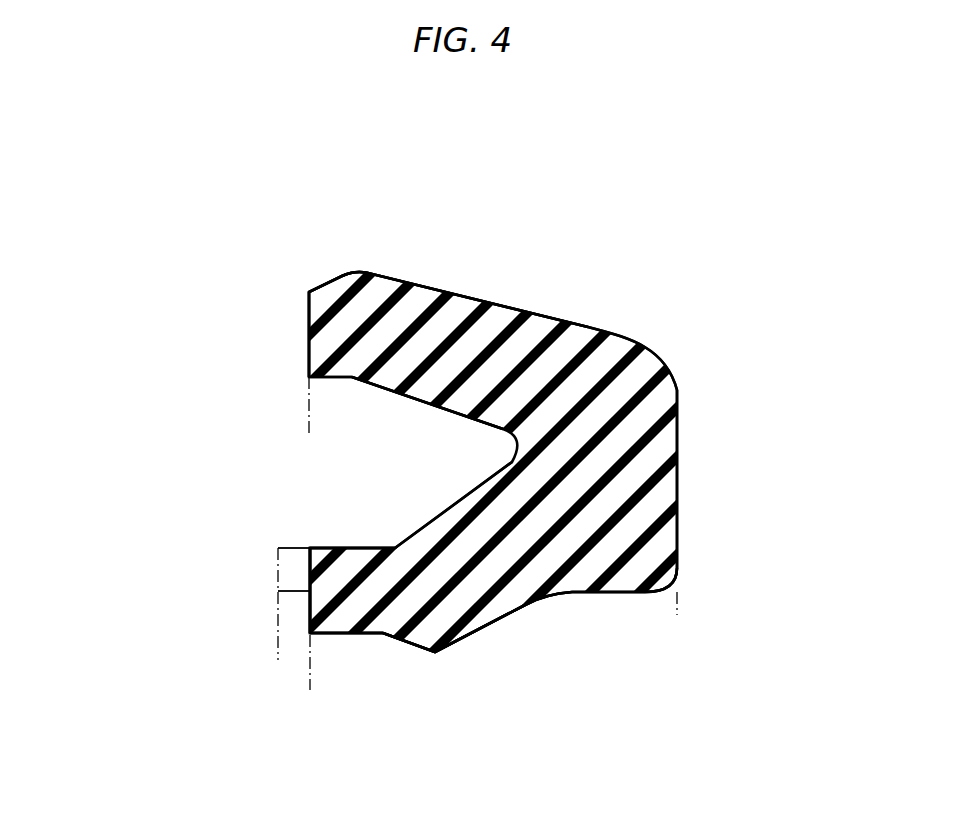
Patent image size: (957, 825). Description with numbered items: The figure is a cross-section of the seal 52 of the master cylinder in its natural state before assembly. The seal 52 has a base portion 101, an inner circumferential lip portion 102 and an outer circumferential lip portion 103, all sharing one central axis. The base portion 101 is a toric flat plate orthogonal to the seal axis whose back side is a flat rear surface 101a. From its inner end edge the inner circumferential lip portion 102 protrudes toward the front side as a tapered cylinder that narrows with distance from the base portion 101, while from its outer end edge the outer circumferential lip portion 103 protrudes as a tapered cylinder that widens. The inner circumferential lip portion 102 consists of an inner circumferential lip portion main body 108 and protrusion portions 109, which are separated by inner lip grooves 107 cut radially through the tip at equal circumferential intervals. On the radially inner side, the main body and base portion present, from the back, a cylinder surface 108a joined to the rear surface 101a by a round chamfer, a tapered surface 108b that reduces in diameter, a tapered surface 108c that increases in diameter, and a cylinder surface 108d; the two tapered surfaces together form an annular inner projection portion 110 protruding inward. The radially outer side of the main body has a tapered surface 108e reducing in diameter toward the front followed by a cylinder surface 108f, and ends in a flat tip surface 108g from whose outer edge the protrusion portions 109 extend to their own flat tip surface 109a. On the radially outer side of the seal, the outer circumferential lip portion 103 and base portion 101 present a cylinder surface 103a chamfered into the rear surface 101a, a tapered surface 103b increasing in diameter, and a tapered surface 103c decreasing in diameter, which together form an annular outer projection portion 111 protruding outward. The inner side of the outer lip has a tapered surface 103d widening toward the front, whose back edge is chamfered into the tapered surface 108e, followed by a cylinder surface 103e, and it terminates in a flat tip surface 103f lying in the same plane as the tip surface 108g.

The seal 52 is at (727, 292).
The base portion 101 is at (567, 510).
The rear surface 101a is at (677, 468).
The inner circumferential lip portion 102 is at (372, 600).
The outer circumferential lip portion 103 is at (316, 290).
The cylinder surface 103a is at (618, 330).
The tapered surface 103b is at (472, 297).
The tapered surface 103c is at (333, 282).
The tapered surface 103d is at (473, 418).
The cylinder surface 103e is at (334, 378).
The tip surface 103f is at (308, 337).
The inner lip groove 107 is at (285, 570).
The inner circumferential lip portion main body 108 is at (310, 633).
The cylinder surface 108a is at (618, 592).
The tapered surface 108b is at (496, 623).
The tapered surface 108c is at (410, 643).
The cylinder surface 108d is at (332, 634).
The tapered surface 108e is at (464, 498).
The cylinder surface 108f is at (368, 548).
The tip surface 108g is at (308, 608).
The protrusion portion 109 is at (278, 548).
The tip surface 109a is at (283, 586).
The inner projection portion 110 is at (435, 655).
The outer projection portion 111 is at (358, 272).